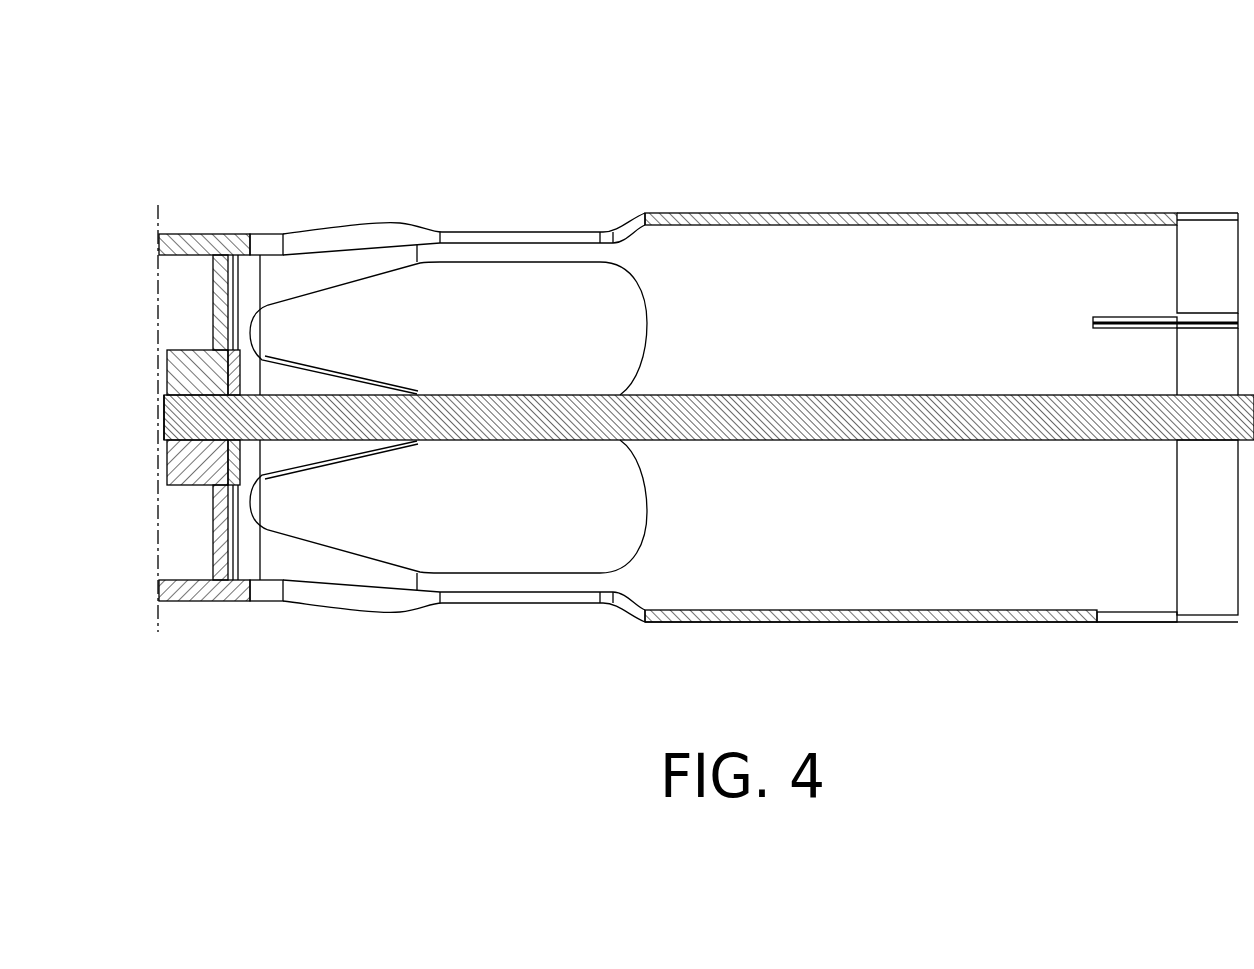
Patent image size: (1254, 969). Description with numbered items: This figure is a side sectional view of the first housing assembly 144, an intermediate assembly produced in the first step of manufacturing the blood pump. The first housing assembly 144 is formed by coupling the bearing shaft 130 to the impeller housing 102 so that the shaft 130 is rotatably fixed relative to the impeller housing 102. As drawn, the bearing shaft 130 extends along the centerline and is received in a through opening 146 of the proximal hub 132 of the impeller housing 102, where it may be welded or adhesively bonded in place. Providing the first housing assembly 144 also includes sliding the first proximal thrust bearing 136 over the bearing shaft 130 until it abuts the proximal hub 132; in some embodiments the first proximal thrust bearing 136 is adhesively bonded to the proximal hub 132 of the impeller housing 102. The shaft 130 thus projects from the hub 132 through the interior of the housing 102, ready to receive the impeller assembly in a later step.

The impeller housing 102 is at (820, 213).
The bearing shaft 130 is at (738, 395).
The proximal hub 132 is at (168, 350).
The first proximal thrust bearing 136 is at (235, 600).
The first housing assembly 144 is at (256, 78).
The through opening 146 is at (167, 420).